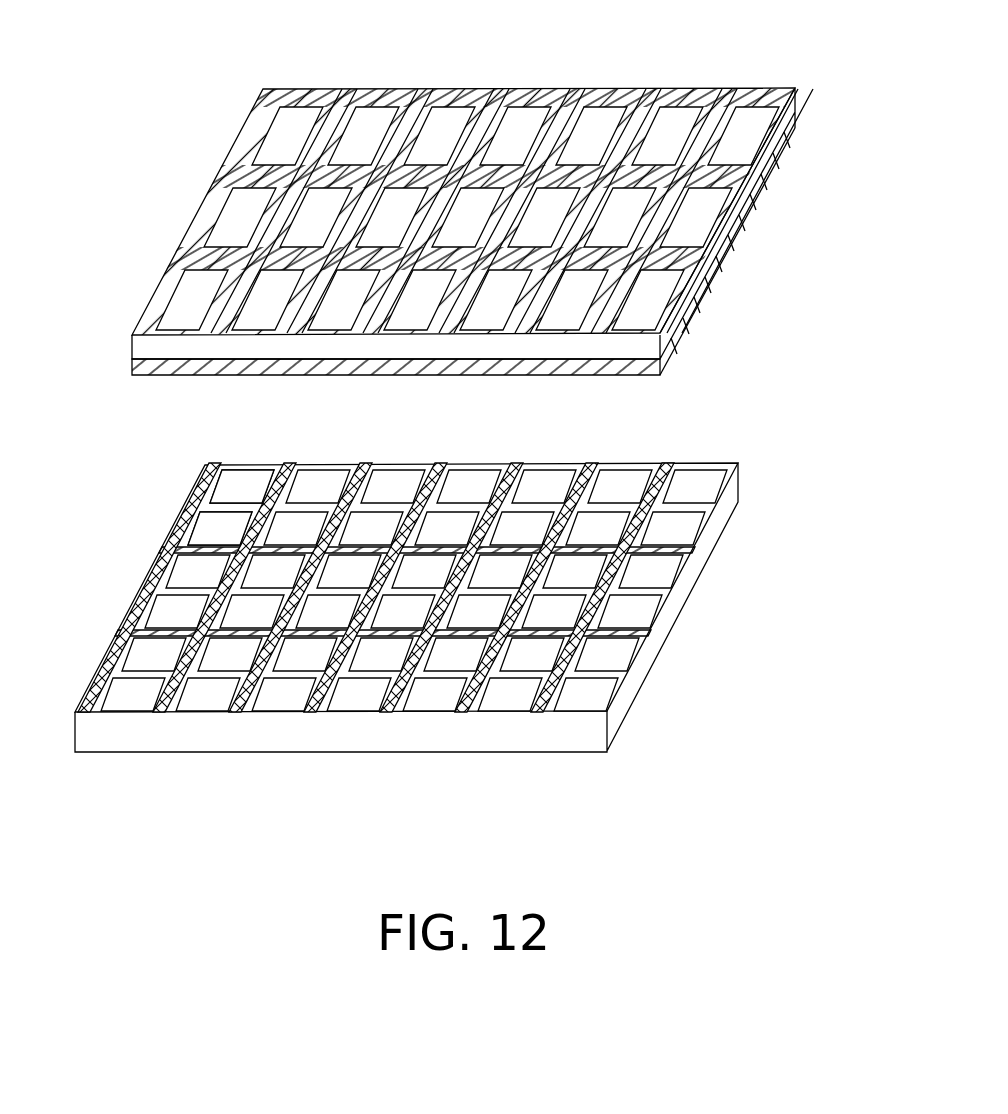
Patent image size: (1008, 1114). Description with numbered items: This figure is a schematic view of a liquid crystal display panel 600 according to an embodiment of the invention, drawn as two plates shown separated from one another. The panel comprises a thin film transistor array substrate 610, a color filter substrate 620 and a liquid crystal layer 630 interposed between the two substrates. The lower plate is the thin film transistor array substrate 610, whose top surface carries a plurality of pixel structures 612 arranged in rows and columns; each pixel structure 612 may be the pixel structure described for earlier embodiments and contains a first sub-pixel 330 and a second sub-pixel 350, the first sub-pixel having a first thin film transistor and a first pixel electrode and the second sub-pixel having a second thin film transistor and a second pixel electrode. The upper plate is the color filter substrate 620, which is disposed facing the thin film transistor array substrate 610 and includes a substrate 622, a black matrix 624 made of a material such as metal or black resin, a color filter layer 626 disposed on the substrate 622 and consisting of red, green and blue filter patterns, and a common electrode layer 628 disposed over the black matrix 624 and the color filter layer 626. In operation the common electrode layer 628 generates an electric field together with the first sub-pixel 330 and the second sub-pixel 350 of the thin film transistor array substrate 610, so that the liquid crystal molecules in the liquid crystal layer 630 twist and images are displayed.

The liquid crystal display panel 600 is at (468, 435).
The thin film transistor array substrate 610 is at (473, 571).
The pixel structure 612 is at (246, 452).
The first sub-pixel 330 is at (257, 480).
The second sub-pixel 350 is at (225, 525).
The color filter substrate 620 is at (468, 189).
The substrate 622 is at (796, 91).
The black matrix 624 is at (183, 257).
The color filter layer 626 is at (292, 125).
The common electrode layer 628 is at (145, 372).
The liquid crystal layer 630 is at (468, 551).